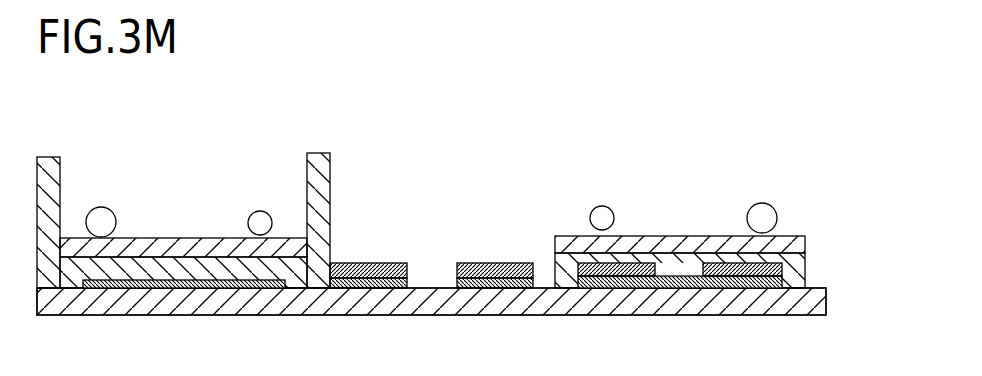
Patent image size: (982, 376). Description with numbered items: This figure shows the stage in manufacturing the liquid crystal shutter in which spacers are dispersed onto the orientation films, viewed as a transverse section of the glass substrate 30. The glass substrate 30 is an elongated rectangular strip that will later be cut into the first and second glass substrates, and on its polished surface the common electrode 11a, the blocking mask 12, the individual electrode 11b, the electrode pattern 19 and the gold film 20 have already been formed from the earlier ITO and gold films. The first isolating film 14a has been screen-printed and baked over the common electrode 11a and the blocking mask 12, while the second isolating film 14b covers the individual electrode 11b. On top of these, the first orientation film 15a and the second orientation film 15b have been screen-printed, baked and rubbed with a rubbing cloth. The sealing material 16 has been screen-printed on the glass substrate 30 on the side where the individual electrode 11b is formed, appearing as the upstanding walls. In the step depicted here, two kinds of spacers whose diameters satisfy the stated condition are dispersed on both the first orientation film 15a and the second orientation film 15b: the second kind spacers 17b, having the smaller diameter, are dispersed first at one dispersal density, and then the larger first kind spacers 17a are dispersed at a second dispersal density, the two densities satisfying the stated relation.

The glass substrate 30 is at (815, 305).
The common electrode 11a is at (674, 298).
The individual electrode 11b is at (181, 270).
The blocking mask 12 is at (632, 250).
The first isolating film 14a is at (792, 268).
The second isolating film 14b is at (224, 272).
The first orientation film 15a is at (568, 232).
The second orientation film 15b is at (133, 250).
The sealing material 16 is at (46, 158).
The first kind spacers 17a is at (102, 218).
The second kind spacers 17b is at (260, 218).
The electrode pattern 19 is at (498, 267).
The gold film 20 is at (370, 270).